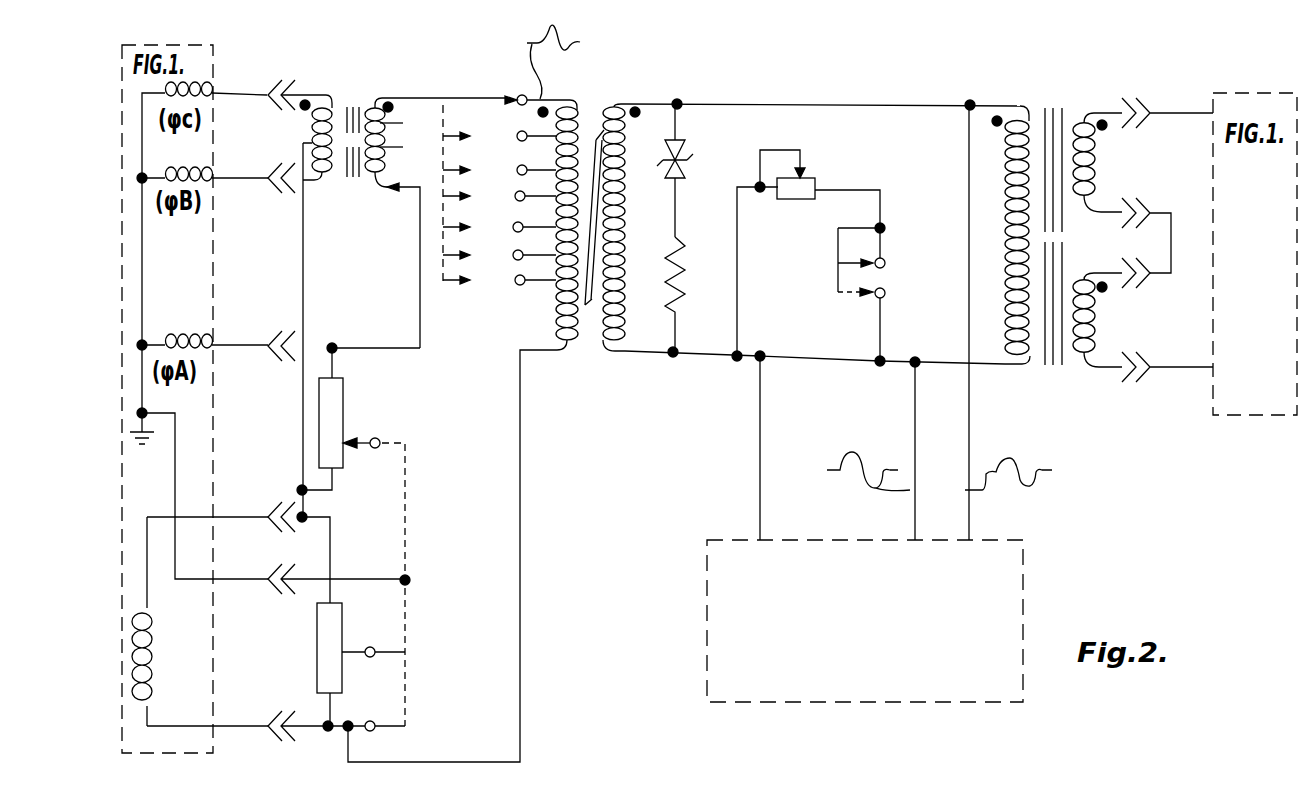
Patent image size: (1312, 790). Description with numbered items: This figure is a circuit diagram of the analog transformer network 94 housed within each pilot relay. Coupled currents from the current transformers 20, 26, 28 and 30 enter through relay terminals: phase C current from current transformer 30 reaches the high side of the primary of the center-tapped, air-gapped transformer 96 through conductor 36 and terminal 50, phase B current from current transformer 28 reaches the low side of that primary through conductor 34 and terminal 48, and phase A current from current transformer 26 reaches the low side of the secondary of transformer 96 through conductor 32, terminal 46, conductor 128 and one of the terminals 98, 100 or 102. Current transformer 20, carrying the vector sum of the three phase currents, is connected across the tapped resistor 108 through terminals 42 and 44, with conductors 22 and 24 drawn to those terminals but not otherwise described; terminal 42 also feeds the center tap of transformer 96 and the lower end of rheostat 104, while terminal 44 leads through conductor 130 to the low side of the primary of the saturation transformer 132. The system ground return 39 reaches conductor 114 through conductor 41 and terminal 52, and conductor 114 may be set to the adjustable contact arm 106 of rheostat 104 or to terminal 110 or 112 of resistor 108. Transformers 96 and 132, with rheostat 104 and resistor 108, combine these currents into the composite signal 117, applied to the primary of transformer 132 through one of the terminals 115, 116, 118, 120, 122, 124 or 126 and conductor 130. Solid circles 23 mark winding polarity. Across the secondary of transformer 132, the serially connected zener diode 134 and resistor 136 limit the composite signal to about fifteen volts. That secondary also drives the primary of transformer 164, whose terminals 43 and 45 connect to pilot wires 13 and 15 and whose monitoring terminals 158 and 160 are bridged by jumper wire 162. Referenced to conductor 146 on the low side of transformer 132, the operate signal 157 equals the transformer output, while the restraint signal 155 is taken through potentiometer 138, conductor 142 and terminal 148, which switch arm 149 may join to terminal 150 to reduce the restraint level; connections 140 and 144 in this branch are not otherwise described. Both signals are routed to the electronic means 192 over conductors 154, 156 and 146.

The pilot wire 13 is at (1189, 108).
The pilot wire 15 is at (1202, 368).
The current transformer 20 is at (152, 620).
The conductor 22 is at (235, 517).
The solid circles 23 is at (304, 110).
The conductor 24 is at (226, 721).
The current transformer 26 is at (176, 336).
The current transformer 28 is at (169, 172).
The current transformer 30 is at (175, 90).
The conductor 32 is at (236, 345).
The conductor 34 is at (242, 186).
The conductor 36 is at (243, 94).
The system ground return 39 is at (142, 450).
The conductor 41 is at (237, 580).
The terminal 42 is at (281, 508).
The terminal 43 is at (1128, 93).
The terminal 44 is at (266, 715).
The terminal 45 is at (1128, 356).
The terminal 46 is at (274, 332).
The terminal 48 is at (275, 200).
The terminal 50 is at (290, 90).
The terminal 52 is at (290, 580).
The transformer network 94 is at (866, 104).
The center-tapped transformer 96 is at (351, 88).
The terminal 98 is at (399, 123).
The terminal 100 is at (399, 147).
The terminal 102 is at (393, 184).
The rheostat 104 is at (343, 384).
The adjustable contact arm 106 is at (384, 437).
The tapped resistor 108 is at (316, 656).
The terminal 110 is at (372, 644).
The terminal 112 is at (372, 719).
The conductor 114 is at (412, 493).
The terminal 115 is at (514, 96).
The terminal 116 is at (517, 135).
The composite signal 117 is at (567, 28).
The terminal 118 is at (517, 168).
The terminal 120 is at (515, 195).
The terminal 122 is at (513, 226).
The terminal 124 is at (513, 254).
The terminal 126 is at (515, 279).
The conductor 128 is at (421, 333).
The conductor 130 is at (521, 526).
The saturation transformer 132 is at (600, 94).
The zener diode 134 is at (687, 161).
The resistor 136 is at (687, 272).
The potentiometer 138 is at (812, 176).
The potentiometer wiper connection 140 is at (762, 195).
The conductor 142 is at (869, 187).
The conductor 144 is at (737, 332).
The conductor 146 is at (758, 410).
The terminal 148 is at (886, 262).
The switch arm 149 is at (848, 263).
The terminal 150 is at (887, 293).
The conductor 154 is at (915, 398).
The restraint signal 155 is at (828, 455).
The conductor 156 is at (970, 408).
The operate signal 157 is at (1015, 460).
The terminal 158 is at (1120, 193).
The terminal 160 is at (1122, 256).
The jumper wire 162 is at (1152, 212).
The transformer 164 is at (1056, 98).
The electronic means 192 is at (876, 688).